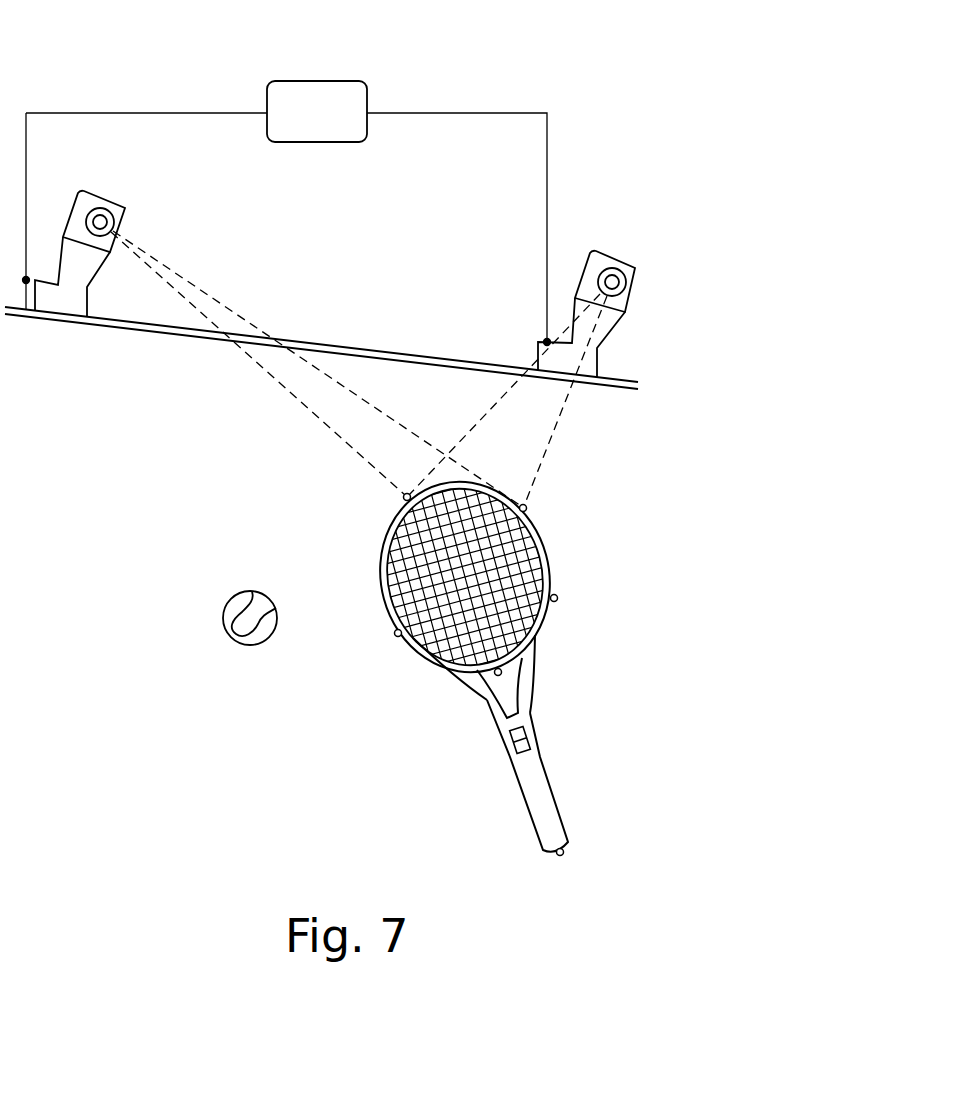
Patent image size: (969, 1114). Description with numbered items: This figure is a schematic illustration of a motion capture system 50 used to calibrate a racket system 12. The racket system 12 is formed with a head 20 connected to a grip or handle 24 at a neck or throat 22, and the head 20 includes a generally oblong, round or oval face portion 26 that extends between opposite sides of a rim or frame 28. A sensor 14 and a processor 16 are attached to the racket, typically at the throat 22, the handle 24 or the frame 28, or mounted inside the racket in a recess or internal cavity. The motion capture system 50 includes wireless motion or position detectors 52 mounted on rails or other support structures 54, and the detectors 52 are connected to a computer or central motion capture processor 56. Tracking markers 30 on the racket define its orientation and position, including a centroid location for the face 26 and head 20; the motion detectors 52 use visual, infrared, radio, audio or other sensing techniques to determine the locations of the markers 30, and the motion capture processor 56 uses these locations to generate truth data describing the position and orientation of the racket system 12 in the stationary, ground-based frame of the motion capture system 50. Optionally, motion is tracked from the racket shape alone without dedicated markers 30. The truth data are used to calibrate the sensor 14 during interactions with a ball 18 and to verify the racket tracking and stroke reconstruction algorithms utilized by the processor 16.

The motion capture system 50 is at (622, 54).
The motion detectors 52 is at (118, 205).
The rails 54 is at (308, 342).
The motion capture processor 56 is at (267, 102).
The racket system 12 is at (333, 500).
The ball 18 is at (243, 592).
The head 20 is at (550, 529).
The throat 22 is at (486, 700).
The handle 24 is at (560, 826).
The face portion 26 is at (494, 569).
The frame 28 is at (380, 549).
The tracking markers 30 is at (396, 638).
The sensor 14 is at (528, 735).
The processor 16 is at (532, 748).